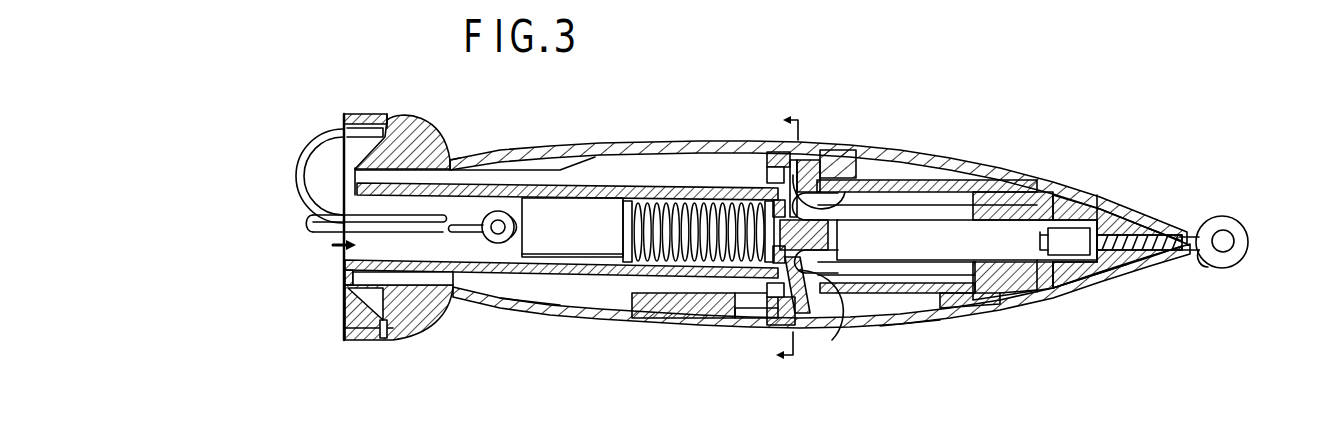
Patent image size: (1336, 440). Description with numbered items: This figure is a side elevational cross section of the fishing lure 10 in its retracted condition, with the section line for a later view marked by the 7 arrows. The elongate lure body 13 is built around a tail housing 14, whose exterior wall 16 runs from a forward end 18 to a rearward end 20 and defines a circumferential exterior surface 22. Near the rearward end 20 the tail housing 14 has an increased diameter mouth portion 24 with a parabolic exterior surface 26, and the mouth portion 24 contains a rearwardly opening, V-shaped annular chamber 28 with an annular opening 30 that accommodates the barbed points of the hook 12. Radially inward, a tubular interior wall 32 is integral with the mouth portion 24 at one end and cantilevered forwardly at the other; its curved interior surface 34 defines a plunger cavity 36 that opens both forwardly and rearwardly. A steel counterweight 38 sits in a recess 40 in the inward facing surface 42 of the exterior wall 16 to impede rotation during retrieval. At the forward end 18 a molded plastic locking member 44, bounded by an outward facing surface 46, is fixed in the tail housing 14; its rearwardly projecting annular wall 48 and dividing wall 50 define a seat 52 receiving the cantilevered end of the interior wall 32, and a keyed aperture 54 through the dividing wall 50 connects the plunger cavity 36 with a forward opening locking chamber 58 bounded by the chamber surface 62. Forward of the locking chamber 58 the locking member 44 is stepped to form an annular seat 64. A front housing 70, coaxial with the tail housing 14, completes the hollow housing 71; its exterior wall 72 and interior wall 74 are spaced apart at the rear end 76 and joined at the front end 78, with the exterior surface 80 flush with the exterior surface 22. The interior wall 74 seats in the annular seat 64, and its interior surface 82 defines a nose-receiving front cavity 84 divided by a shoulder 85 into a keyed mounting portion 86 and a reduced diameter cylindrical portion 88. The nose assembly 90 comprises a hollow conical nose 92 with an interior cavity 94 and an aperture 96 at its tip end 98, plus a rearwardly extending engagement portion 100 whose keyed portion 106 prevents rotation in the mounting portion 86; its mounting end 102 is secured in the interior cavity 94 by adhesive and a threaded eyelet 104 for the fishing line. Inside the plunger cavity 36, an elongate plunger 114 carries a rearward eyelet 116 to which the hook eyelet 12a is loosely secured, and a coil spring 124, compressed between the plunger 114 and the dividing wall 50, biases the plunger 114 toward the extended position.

The fishing lure 10 is at (1131, 78).
The hook 12 is at (298, 166).
The eyelet 12a is at (460, 226).
The lure body 13 is at (906, 336).
The tail housing 14 is at (653, 150).
The exterior wall 16 is at (614, 188).
The forward end 18 is at (773, 150).
The rearward end 20 is at (345, 340).
The exterior surface 22 is at (696, 188).
The mouth portion 24 is at (397, 140).
The exterior surface 26 is at (362, 113).
The annular chamber 28 is at (341, 128).
The annular opening 30 is at (342, 312).
The interior wall 32 is at (403, 267).
The interior surface 34 is at (378, 258).
The plunger cavity 36 is at (333, 245).
The counterweight 38 is at (670, 312).
The recess 40 is at (640, 320).
The inward facing surface 42 is at (572, 320).
The locking member 44 is at (812, 148).
The outward facing surface 46 is at (842, 152).
The annular wall 48 is at (735, 200).
The dividing wall 50 is at (755, 150).
The seat 52 is at (748, 320).
The aperture 54 is at (715, 305).
The locking chamber 58 is at (880, 218).
The chamber surface 62 is at (832, 314).
The annular seat 64 is at (840, 172).
The front housing 70 is at (1010, 302).
The hollow housing 71 is at (500, 142).
The exterior wall 72 is at (861, 323).
The interior wall 74 is at (940, 309).
The rear end 76 is at (820, 330).
The front end 78 is at (1035, 285).
The exterior surface 80 is at (860, 165).
The interior surface 82 is at (962, 185).
The front cavity 84 is at (1093, 195).
The shoulder 85 is at (971, 302).
The mounting portion 86 is at (1003, 195).
The cylindrical portion 88 is at (1026, 196).
The nose assembly 90 is at (1168, 196).
The conical nose 92 is at (1137, 200).
The interior cavity 94 is at (1128, 270).
The aperture 96 is at (1163, 230).
The tip end 98 is at (1185, 224).
The engagement portion 100 is at (1083, 272).
The mounting end 102 is at (1172, 262).
The threaded eyelet 104 is at (1248, 243).
The keyed portion 106 is at (1052, 288).
The plunger 114 is at (530, 198).
The eyelet 116 is at (498, 244).
The coil spring 124 is at (617, 216).
The section line 7- 7 is at (799, 238).